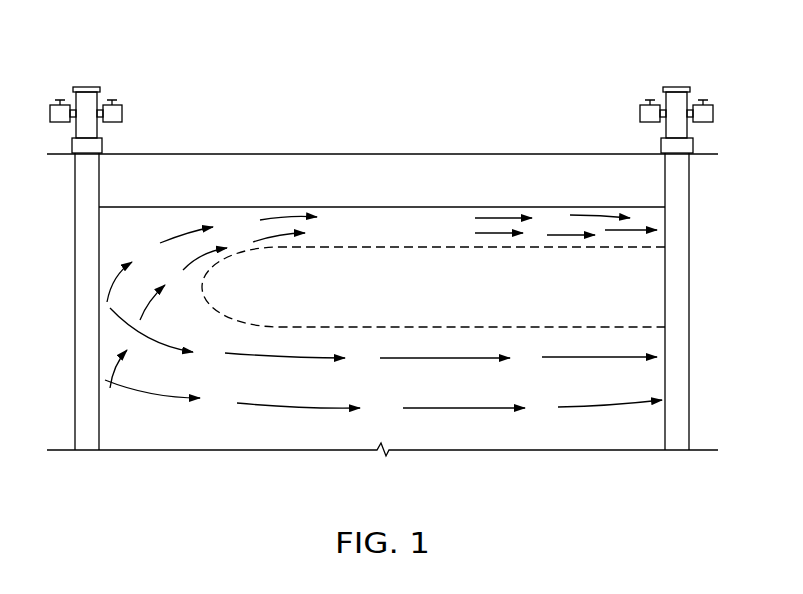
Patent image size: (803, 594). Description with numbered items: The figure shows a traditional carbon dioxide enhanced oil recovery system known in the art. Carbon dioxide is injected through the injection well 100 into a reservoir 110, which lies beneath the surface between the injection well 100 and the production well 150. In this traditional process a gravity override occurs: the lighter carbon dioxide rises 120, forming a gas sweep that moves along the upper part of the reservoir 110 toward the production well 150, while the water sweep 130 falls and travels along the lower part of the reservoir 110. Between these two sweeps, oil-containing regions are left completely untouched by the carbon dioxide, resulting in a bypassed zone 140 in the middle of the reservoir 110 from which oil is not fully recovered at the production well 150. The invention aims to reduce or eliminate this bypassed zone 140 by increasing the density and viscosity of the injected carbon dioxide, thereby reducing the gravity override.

The injection well 100 is at (117, 63).
The production well 150 is at (649, 63).
The reservoir 110 is at (171, 432).
The carbon dioxide rise 120 is at (387, 212).
The bypassed zone 140 is at (567, 297).
The water sweep 130 is at (378, 410).